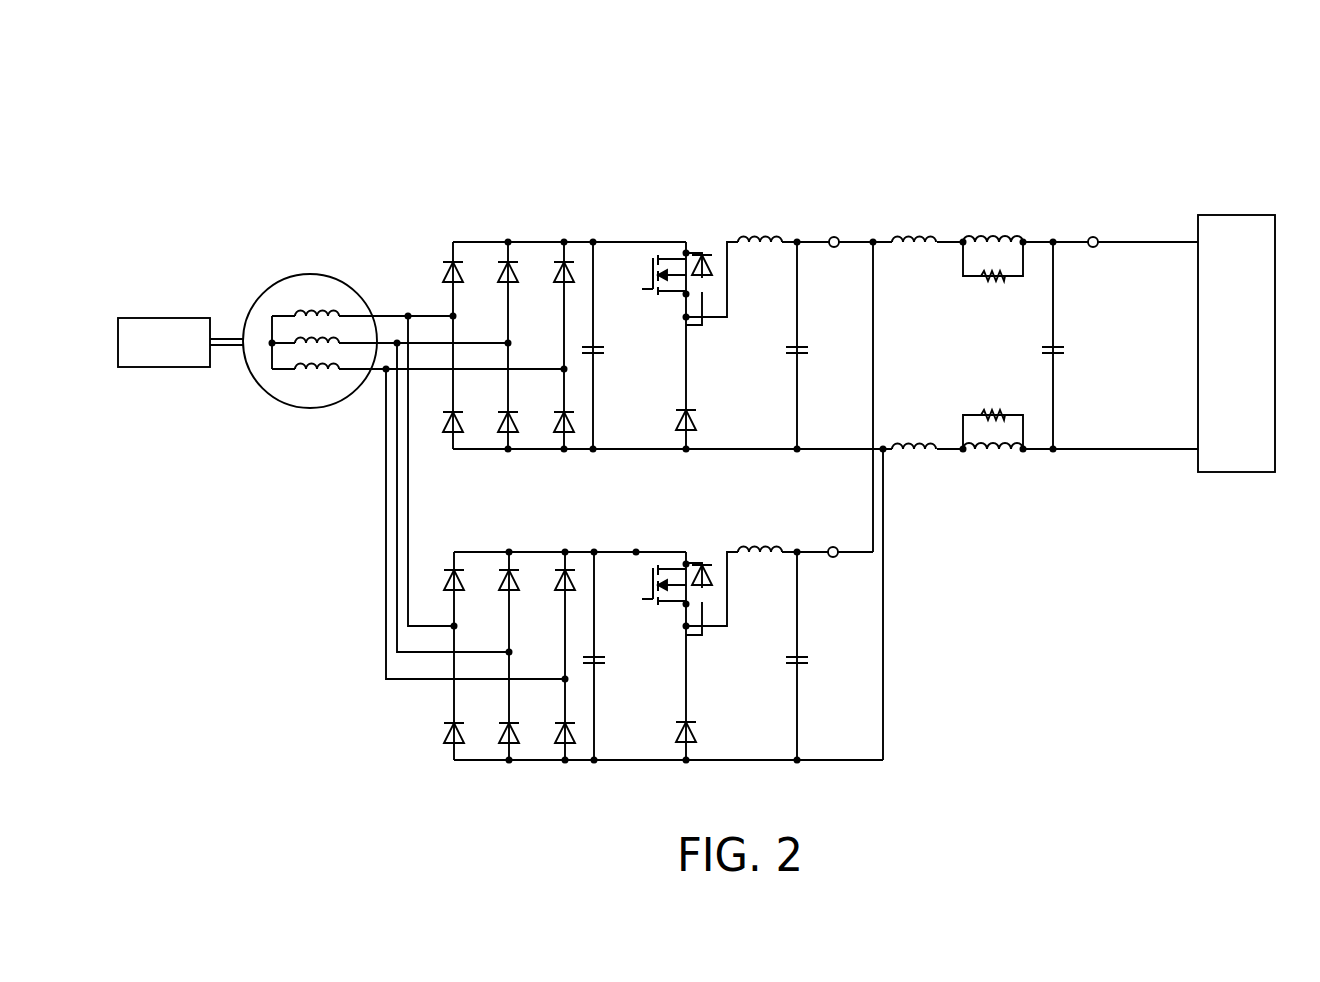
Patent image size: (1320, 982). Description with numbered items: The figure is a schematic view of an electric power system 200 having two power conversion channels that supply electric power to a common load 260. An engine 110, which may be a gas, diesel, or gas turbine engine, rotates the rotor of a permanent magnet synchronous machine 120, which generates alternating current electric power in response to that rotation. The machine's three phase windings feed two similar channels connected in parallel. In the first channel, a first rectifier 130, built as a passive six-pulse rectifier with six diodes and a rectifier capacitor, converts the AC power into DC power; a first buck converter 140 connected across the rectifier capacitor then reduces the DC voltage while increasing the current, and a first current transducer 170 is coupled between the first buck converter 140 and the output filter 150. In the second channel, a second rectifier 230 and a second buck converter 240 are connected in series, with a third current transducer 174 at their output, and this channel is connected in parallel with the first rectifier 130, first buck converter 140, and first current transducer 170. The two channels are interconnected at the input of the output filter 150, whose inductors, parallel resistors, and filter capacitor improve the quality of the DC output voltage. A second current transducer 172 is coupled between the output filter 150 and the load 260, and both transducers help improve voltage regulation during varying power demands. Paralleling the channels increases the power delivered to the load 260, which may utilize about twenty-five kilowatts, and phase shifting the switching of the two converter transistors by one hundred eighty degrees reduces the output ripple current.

The electric power system 200 is at (822, 93).
The engine 110 is at (141, 318).
The permanent magnet synchronous machine 120 is at (258, 296).
The first rectifier 130 is at (615, 180).
The first buck converter 140 is at (618, 180).
The output filter 150 is at (868, 180).
The load 260 is at (1163, 183).
The first current transducer 170 is at (835, 255).
The second current transducer 172 is at (1106, 257).
The third current transducer 174 is at (838, 541).
The second rectifier 230 is at (420, 518).
The second buck converter 240 is at (618, 518).